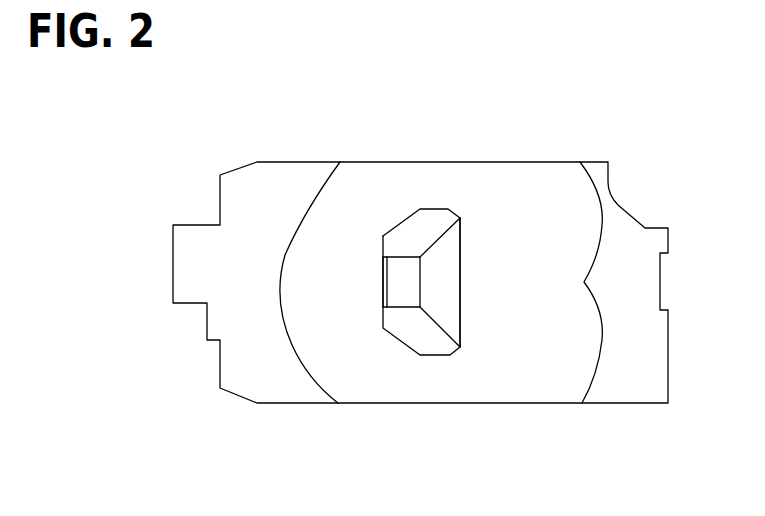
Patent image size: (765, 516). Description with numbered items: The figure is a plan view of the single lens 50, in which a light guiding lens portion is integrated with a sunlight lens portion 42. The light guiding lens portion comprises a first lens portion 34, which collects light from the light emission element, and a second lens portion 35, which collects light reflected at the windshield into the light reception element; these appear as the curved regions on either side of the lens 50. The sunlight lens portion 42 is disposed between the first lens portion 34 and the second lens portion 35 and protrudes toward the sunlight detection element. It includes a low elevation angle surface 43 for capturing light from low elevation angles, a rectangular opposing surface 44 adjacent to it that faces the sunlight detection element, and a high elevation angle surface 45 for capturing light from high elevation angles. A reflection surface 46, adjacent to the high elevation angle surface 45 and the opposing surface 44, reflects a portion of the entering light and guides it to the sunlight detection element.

The lens 50 is at (608, 178).
The second lens portion 35 is at (345, 358).
The first lens portion 34 is at (538, 363).
The sunlight lens portion 42 is at (422, 277).
The low elevation angle surface 43 is at (447, 272).
The opposing surface 44 is at (405, 277).
The high elevation angle surface 45 is at (380, 268).
The reflection surface 46 is at (383, 290).